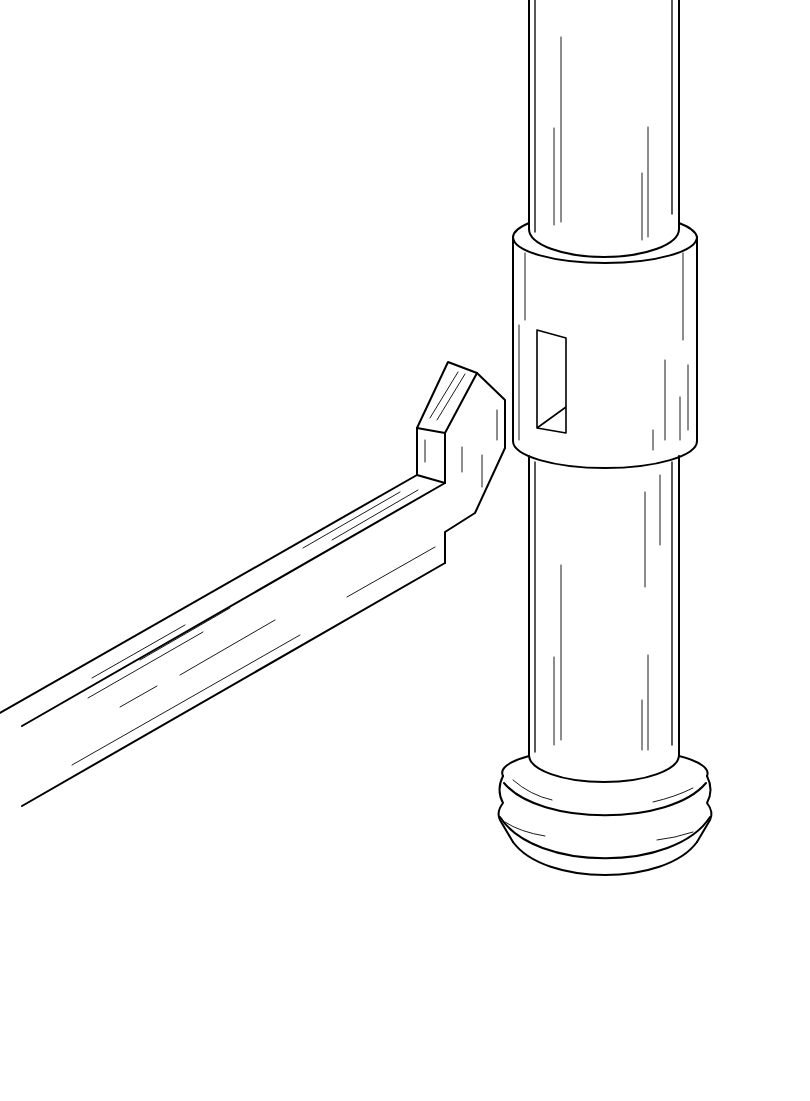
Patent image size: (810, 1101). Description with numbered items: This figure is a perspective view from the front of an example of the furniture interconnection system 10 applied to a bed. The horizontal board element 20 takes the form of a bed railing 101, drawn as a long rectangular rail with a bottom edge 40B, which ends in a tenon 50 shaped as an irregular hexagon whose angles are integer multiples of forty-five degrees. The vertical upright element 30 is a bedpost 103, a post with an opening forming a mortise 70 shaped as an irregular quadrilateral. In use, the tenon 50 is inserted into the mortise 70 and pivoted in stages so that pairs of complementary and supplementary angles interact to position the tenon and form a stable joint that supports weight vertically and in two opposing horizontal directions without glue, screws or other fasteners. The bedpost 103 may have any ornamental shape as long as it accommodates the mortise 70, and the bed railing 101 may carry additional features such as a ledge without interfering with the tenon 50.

The furniture interconnection system 10 is at (353, 292).
The horizontal board element 20 is at (143, 568).
The vertical upright element 30 is at (473, 94).
The bottom edge 40B is at (268, 666).
The tenon 50 is at (483, 393).
The mortise 70 is at (558, 372).
The bed railing 101 is at (275, 603).
The bedpost 103 is at (652, 88).